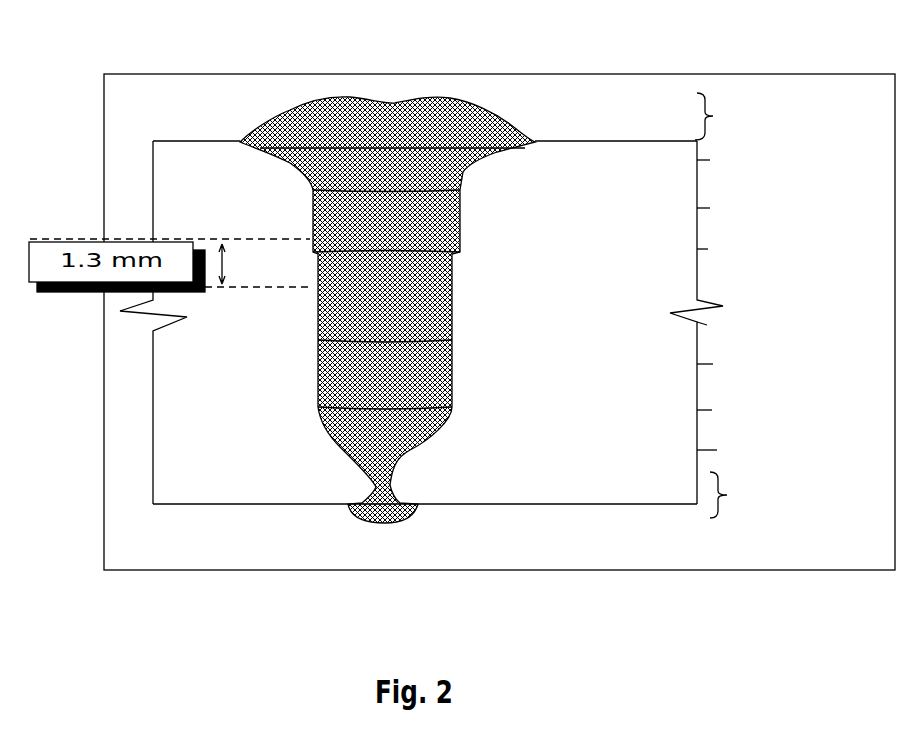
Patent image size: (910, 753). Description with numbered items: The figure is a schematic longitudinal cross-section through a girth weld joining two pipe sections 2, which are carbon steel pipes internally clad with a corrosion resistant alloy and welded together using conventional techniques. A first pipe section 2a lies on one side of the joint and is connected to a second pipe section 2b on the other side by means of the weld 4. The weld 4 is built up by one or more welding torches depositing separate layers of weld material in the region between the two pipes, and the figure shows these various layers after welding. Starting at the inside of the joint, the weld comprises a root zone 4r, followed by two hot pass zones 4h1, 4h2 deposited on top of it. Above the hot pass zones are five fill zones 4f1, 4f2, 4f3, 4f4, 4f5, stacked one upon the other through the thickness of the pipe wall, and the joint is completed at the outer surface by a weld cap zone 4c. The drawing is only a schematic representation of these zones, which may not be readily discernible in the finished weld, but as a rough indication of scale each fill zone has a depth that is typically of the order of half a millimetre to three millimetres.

The pipe sections 2 is at (567, 158).
The first pipe section 2a is at (238, 405).
The second pipe section 2b is at (545, 450).
The weld 4 is at (472, 120).
The weld cap zone 4c is at (722, 116).
The first fill zone 4f1 is at (713, 364).
The second fill zone 4f2 is at (707, 325).
The third fill zone 4f3 is at (705, 249).
The fourth fill zone 4f4 is at (708, 208).
The fifth fill zone 4f5 is at (708, 161).
The first hot pass zone 4h1 is at (717, 450).
The second hot pass zone 4h2 is at (712, 410).
The root zone 4r is at (739, 495).